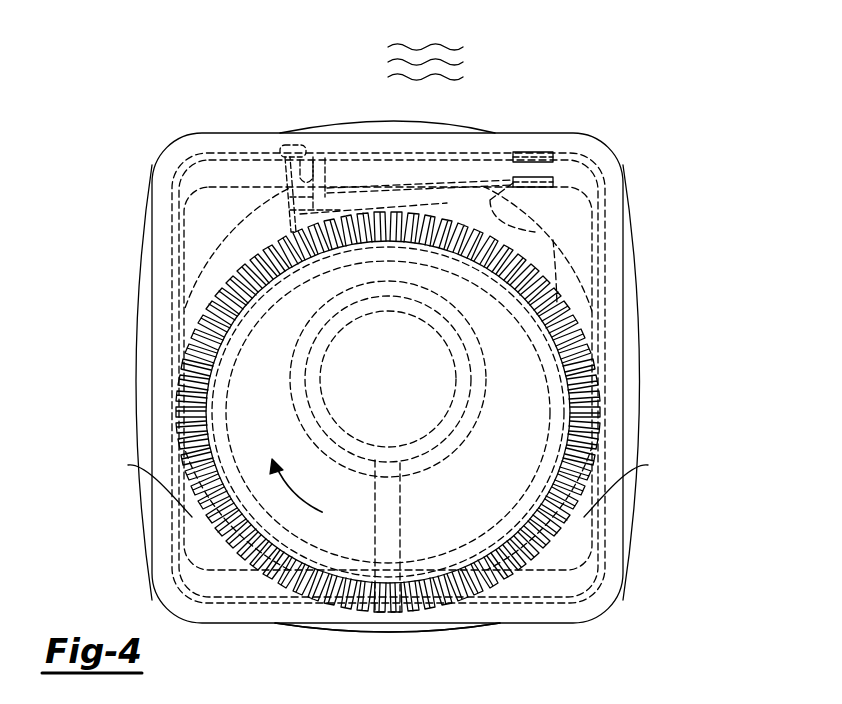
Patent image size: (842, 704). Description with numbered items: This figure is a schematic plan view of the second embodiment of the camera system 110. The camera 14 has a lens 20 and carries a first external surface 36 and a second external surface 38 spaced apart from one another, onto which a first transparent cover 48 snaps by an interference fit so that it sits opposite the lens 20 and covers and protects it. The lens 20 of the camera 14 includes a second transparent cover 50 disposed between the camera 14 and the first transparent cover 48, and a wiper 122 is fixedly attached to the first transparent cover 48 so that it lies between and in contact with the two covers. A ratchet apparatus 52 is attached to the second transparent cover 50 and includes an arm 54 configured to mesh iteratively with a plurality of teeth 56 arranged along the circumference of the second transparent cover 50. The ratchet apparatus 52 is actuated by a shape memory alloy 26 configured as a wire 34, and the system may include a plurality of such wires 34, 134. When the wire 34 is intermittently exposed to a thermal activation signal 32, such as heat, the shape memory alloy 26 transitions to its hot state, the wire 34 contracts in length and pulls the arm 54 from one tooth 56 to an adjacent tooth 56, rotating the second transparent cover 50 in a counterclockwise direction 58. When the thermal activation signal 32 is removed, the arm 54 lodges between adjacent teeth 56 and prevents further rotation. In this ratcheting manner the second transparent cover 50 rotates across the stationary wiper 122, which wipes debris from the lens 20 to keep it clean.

The camera 14 is at (640, 383).
The lens 20 is at (400, 384).
The shape memory alloy 26 is at (547, 126).
The thermal activation signal 32 is at (434, 47).
The wire 34 is at (495, 150).
The wire 134 is at (540, 178).
The first external surface 36 is at (611, 503).
The second external surface 38 is at (166, 503).
The first transparent cover 48 is at (535, 623).
The second transparent cover 50 is at (558, 446).
The ratchet apparatus 52 is at (406, 197).
The arm 54 is at (283, 186).
The teeth 56 is at (540, 232).
The counterclockwise direction 58 is at (296, 491).
The camera system 110 is at (199, 76).
The wiper 122 is at (403, 532).